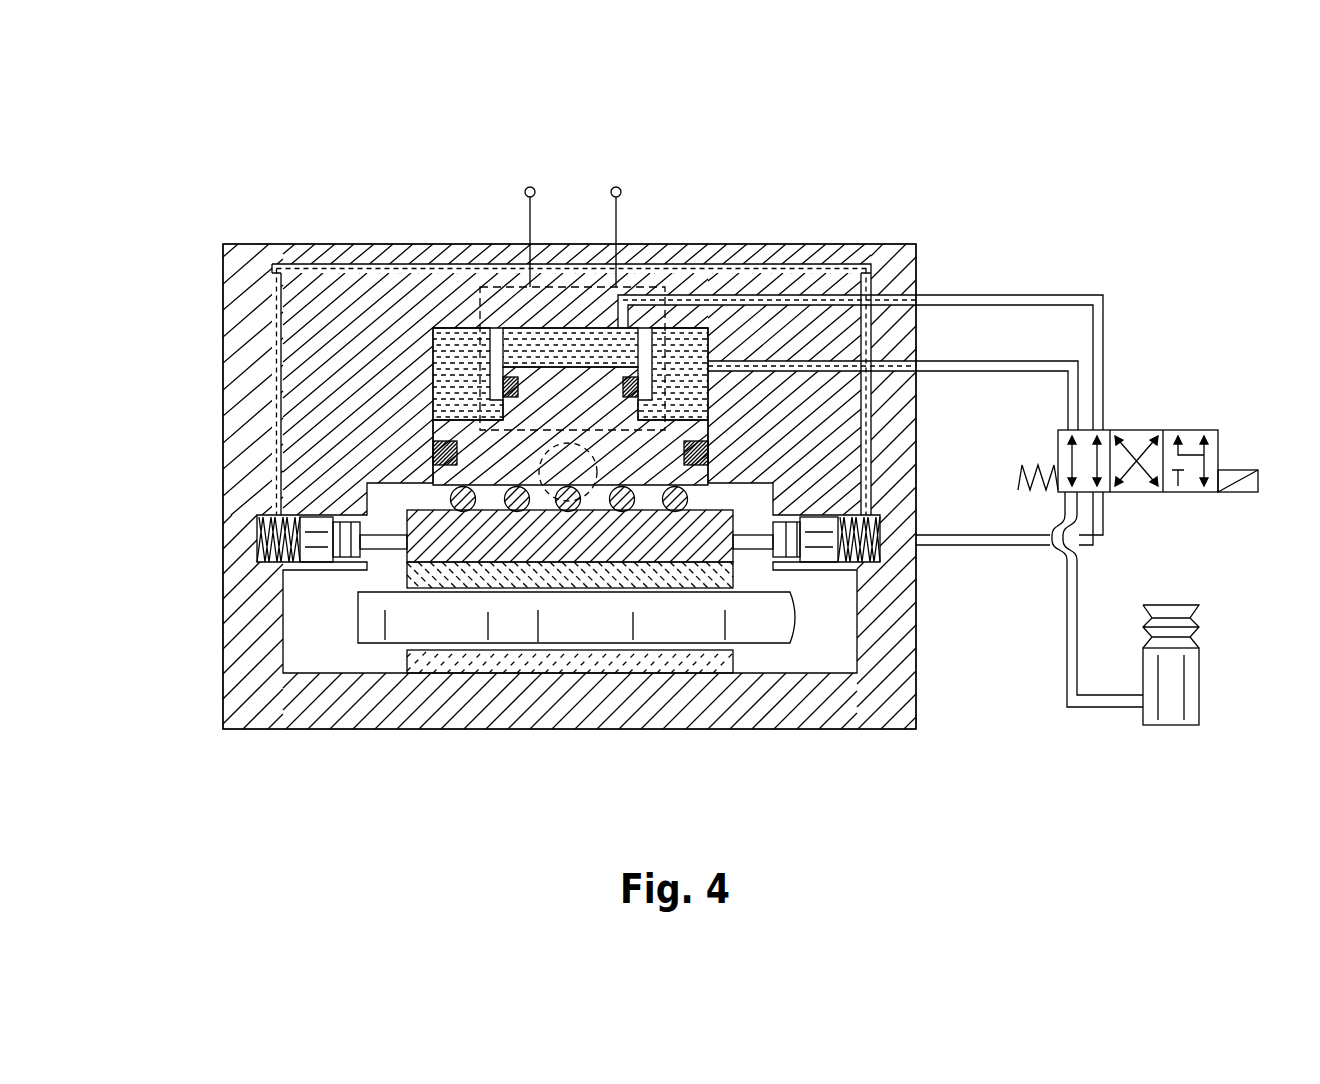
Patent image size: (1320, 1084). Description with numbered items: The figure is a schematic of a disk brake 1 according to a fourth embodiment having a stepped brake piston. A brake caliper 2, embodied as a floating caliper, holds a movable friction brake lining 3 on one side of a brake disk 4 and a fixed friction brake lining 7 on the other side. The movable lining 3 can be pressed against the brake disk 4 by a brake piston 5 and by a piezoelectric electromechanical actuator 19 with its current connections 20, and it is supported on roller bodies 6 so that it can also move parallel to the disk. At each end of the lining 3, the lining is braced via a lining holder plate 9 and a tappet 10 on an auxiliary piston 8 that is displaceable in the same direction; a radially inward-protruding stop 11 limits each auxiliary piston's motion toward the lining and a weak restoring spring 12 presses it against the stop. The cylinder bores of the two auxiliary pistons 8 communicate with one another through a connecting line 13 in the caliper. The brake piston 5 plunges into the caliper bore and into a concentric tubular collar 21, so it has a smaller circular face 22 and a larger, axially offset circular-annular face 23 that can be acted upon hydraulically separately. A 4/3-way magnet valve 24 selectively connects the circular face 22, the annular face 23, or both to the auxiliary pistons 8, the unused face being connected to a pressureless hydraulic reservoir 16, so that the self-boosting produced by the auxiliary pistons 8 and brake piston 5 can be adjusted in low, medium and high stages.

The disk brake 1 is at (255, 180).
The brake caliper 2 is at (250, 375).
The friction brake lining 3 is at (593, 585).
The brake disk 4 is at (538, 614).
The brake piston 5 is at (470, 437).
The roller bodies 6 is at (678, 512).
The fixed friction brake lining 7 is at (473, 667).
The auxiliary pistons 8 is at (318, 533).
The lining holder plate 9 is at (463, 547).
The tappet 10 is at (388, 542).
The stop 11 is at (343, 562).
The restoring spring 12 is at (258, 540).
The connecting line 13 is at (845, 270).
The hydraulic reservoir 16 is at (1185, 697).
The electromechanical actuator 19 is at (484, 287).
The current connections 20 is at (612, 188).
The tubular collar 21 is at (483, 353).
The circular face 22 is at (607, 365).
The circular-annular face 23 is at (672, 417).
The 4/3-way magnet valve 24 is at (1160, 430).